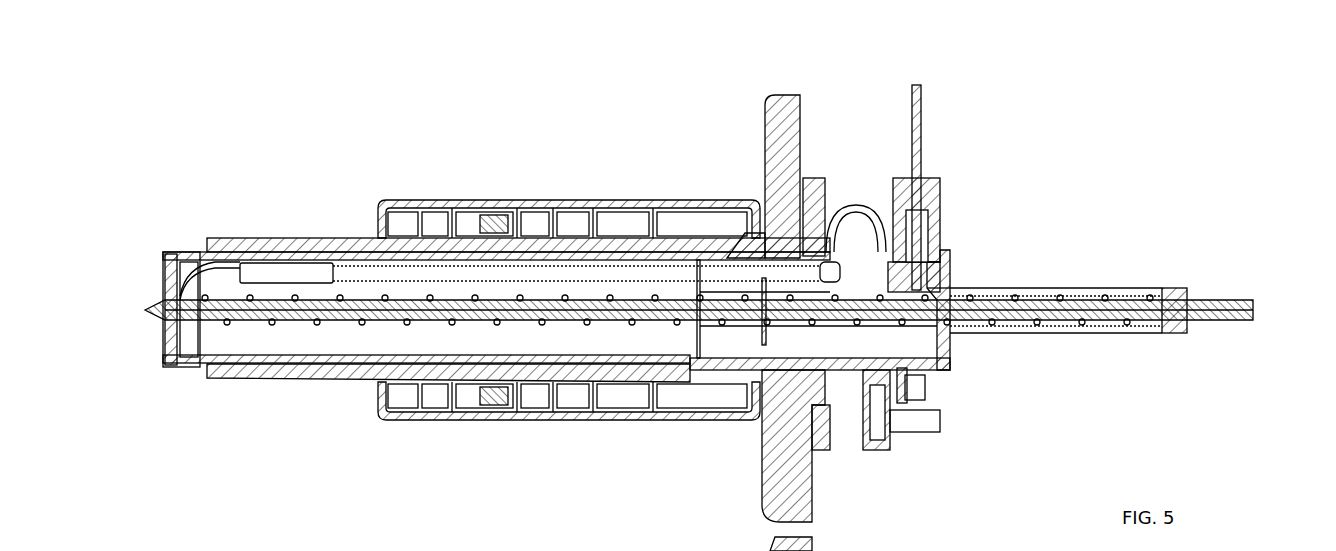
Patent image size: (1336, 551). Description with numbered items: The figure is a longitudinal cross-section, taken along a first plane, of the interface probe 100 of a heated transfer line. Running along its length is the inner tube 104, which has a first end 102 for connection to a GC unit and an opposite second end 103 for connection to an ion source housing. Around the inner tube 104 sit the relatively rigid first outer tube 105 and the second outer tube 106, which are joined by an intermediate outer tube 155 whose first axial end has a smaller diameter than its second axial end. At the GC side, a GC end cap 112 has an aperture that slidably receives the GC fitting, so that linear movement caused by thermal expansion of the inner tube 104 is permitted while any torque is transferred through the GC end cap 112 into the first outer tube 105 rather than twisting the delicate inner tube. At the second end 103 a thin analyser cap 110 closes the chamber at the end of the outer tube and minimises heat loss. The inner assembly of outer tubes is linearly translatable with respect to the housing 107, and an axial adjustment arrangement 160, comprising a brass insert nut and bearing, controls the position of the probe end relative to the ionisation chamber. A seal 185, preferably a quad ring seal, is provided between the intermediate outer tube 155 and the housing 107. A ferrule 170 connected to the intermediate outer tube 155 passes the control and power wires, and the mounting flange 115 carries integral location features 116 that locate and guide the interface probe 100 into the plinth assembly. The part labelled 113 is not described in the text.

The interface probe 100 is at (1150, 178).
The first end 102 is at (721, 262).
The second end 103 is at (153, 225).
The inner tube 104 is at (1104, 310).
The first outer tube 105 is at (1036, 290).
The second outer tube 106 is at (240, 255).
The housing 107 is at (326, 255).
The analyser cap 110 is at (178, 272).
The GC end cap 112 is at (1185, 296).
The latch clip 113 is at (405, 213).
The mounting flange 115 is at (792, 105).
The location features 116 is at (818, 192).
The intermediate outer tube 155 is at (740, 252).
The axial adjustment arrangement 160 is at (960, 399).
The ferrule 170 is at (925, 195).
The seal 185 is at (762, 245).